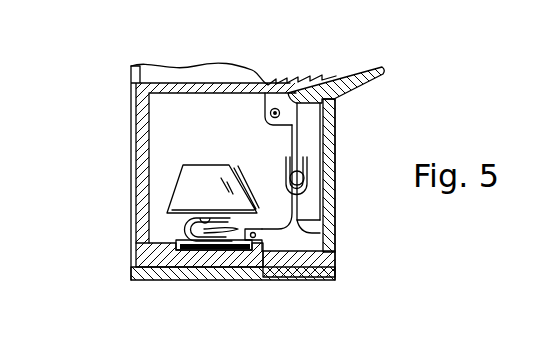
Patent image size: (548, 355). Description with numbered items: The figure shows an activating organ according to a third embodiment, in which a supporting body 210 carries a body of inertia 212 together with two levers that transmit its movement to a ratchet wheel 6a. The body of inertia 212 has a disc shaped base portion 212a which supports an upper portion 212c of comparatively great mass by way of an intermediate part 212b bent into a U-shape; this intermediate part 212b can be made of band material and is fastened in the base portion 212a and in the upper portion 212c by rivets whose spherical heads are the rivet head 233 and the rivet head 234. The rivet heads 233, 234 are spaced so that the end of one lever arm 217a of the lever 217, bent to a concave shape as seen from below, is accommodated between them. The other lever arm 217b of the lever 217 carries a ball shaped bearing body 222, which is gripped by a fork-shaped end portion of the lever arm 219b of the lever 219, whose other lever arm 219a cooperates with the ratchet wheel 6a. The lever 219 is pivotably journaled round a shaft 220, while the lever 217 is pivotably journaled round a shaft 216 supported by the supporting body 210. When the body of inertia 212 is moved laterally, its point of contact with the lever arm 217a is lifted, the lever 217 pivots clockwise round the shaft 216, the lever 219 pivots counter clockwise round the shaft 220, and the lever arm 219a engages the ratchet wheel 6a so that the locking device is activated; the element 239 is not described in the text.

The ratchet wheel 6a is at (363, 72).
The supporting body 210 is at (160, 116).
The body of inertia 212 is at (183, 207).
The disc shaped base portion 212a is at (222, 263).
The intermediate part 212b is at (182, 226).
The upper portion 212c is at (198, 182).
The shaft 216 is at (298, 281).
The lever 217 is at (263, 229).
The lever arm 217a is at (286, 126).
The lever arm 217b is at (300, 207).
The lever 219 is at (334, 125).
The lever arm 219a is at (332, 98).
The lever arm 219b is at (294, 141).
The shaft 220 is at (275, 107).
The bearing body 222 is at (302, 168).
The rivet head 233 is at (222, 262).
The rivet head 234 is at (210, 216).
The bottom plate 239 is at (160, 262).